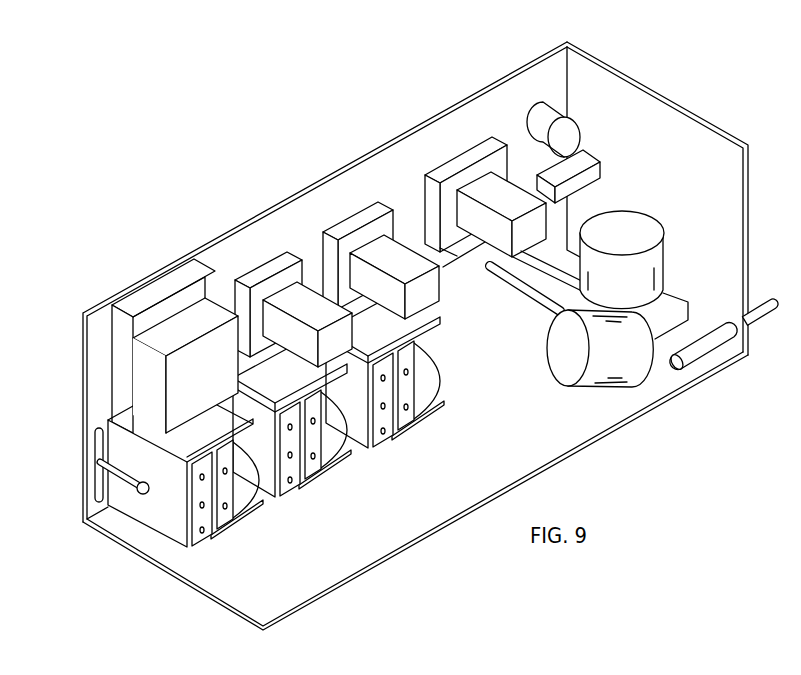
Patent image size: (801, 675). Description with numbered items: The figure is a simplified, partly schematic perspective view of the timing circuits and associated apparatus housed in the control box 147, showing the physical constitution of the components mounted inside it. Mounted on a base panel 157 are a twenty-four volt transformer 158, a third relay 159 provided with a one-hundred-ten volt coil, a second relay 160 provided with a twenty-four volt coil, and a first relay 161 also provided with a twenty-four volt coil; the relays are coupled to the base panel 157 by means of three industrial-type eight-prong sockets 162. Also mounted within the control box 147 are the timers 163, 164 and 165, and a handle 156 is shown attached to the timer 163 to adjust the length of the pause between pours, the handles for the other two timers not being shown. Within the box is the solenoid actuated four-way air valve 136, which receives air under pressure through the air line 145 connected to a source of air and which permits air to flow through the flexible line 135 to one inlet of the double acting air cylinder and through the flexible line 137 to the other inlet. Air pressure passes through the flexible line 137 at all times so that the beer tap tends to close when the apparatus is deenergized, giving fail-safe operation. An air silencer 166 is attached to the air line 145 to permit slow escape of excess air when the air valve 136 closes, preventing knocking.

The control box 147 is at (636, 76).
The base panel 157 is at (340, 171).
The air line 145 is at (759, 321).
The flexible line 135 is at (551, 262).
The solenoid actuated four-way air valve 136 is at (647, 223).
The flexible line 137 is at (538, 293).
The handle 156 is at (164, 502).
The 24 volt transformer 158 is at (215, 385).
The third relay 159 is at (320, 316).
The second relay 160 is at (405, 268).
The first relay 161 is at (512, 210).
The 8 prong socket 162 is at (312, 253).
The timer 163 is at (216, 488).
The timer 164 is at (309, 438).
The timer 165 is at (411, 384).
The air silencer 166 is at (627, 355).